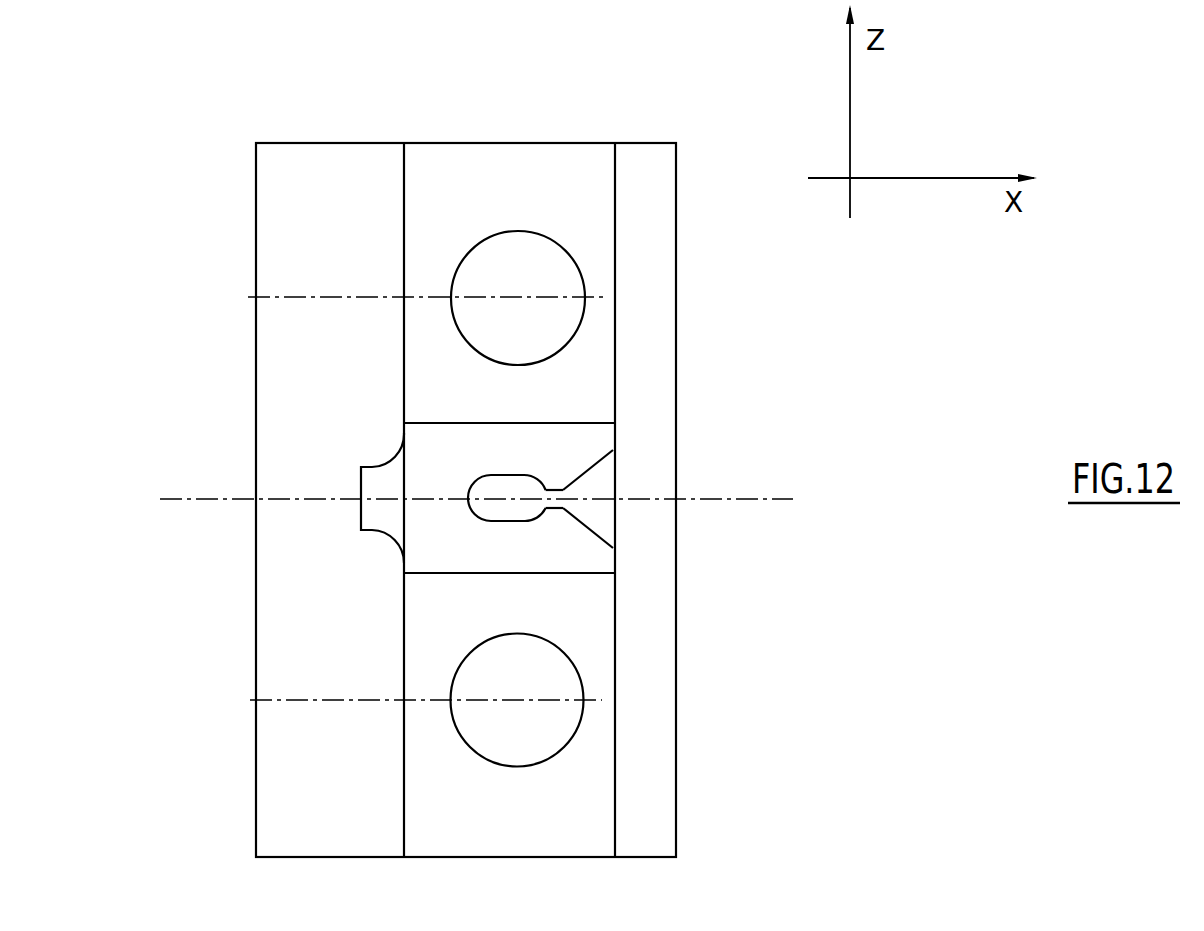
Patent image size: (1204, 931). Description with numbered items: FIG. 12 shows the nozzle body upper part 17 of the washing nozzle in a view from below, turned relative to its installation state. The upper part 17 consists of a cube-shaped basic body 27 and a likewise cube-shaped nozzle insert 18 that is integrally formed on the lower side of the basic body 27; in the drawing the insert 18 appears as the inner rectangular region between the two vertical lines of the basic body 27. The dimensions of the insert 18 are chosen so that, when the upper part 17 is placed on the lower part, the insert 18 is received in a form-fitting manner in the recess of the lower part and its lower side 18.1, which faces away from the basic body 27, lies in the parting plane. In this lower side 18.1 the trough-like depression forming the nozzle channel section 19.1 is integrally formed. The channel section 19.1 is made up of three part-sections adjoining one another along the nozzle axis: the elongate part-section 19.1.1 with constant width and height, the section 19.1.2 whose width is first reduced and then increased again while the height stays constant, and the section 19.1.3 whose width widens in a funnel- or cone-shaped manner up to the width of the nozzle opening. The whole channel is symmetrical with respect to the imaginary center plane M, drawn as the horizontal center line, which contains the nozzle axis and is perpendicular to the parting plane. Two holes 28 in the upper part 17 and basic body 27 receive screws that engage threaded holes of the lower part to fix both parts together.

The nozzle body upper part 17 is at (500, 130).
The basic body 27 is at (466, 119).
The holes 28 is at (555, 258).
The nozzle insert 18 is at (574, 464).
The lower side of the insert 18.1 is at (384, 525).
The nozzle channel section 19.1 is at (561, 406).
The elongate part-section 19.1.1 is at (489, 546).
The constricted section 19.1.2 is at (549, 553).
The funnel-shaped section 19.1.3 is at (602, 475).
The center plane M is at (479, 519).